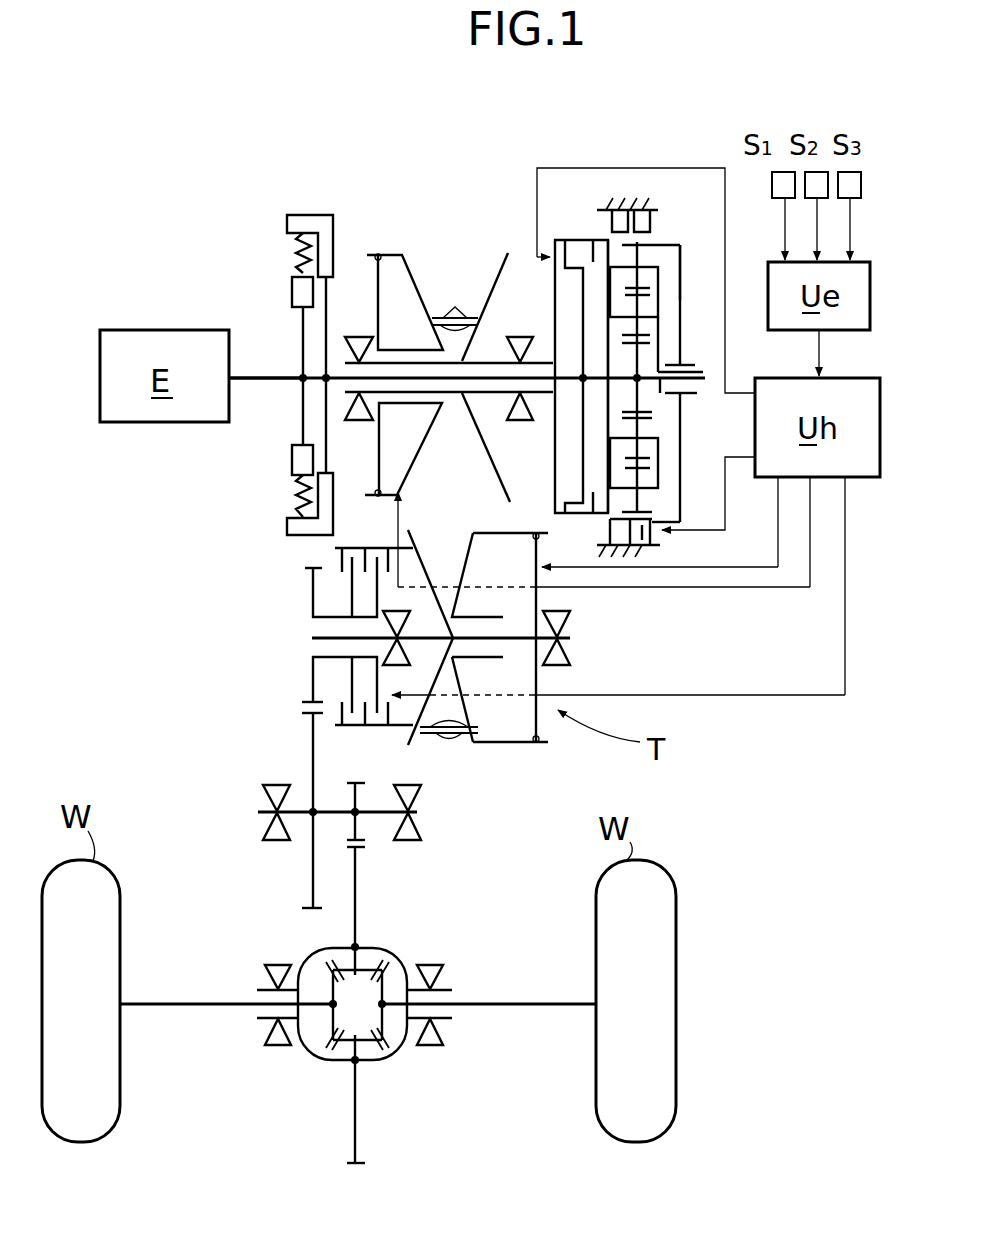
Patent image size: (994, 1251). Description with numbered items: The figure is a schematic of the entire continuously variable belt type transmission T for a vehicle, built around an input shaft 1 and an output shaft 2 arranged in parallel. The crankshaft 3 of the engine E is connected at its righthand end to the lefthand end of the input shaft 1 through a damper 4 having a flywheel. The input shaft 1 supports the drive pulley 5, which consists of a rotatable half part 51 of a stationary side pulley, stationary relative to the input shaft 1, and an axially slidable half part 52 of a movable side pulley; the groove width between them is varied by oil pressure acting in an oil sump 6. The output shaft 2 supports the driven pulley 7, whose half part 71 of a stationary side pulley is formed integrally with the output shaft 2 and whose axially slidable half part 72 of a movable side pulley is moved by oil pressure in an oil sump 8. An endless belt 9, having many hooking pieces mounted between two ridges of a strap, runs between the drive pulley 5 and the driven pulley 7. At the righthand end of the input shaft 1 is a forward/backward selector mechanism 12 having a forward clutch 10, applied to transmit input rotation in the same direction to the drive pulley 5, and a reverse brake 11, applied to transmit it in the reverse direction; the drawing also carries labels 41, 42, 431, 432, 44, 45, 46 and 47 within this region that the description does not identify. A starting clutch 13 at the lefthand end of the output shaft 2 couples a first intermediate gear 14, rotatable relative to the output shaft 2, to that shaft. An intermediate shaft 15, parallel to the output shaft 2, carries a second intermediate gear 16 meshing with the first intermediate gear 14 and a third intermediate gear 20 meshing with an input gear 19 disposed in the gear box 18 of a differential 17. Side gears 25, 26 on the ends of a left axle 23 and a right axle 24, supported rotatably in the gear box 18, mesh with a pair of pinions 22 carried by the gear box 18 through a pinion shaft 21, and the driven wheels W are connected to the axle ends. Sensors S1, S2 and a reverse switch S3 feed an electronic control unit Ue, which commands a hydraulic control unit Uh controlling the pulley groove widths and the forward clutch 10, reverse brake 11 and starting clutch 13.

The input shaft 1 is at (706, 378).
The output shaft 2 is at (569, 635).
The crankshaft 3 is at (272, 382).
The damper 4 is at (342, 232).
The drive pulley 5 is at (449, 337).
The half part of stationary side pulley 51 is at (493, 277).
The half part of movable side pulley 52 is at (418, 278).
The oil sump 6 is at (409, 446).
The driven pulley 7 is at (485, 477).
The half part of stationary side pulley 71 is at (412, 530).
The half part of movable side pulley 72 is at (470, 534).
The oil sump 8 is at (515, 569).
The endless belt 9 is at (447, 738).
The forward clutch 10 is at (556, 232).
The reverse brake 11 is at (666, 220).
The forward/backward selector mechanism 12 is at (696, 403).
The starting clutch 13 is at (372, 730).
The first intermediate gear 14 is at (305, 569).
The intermediate shaft 15 is at (266, 806).
The second intermediate gear 16 is at (305, 912).
The differential 17 is at (354, 992).
The gear box 18 is at (402, 1050).
The input gear 19 is at (358, 1164).
The third intermediate gear 20 is at (364, 778).
The pinion shaft 21 is at (378, 960).
The pinions 22 is at (331, 961).
The left axle 23 is at (206, 1008).
The right axle 24 is at (525, 1010).
The side gear 25 is at (266, 985).
The side gear 26 is at (406, 960).
The planet carrier 41 is at (685, 306).
The sun gear 42 is at (632, 350).
The ring gear 431 is at (683, 280).
The clutch member 432 is at (606, 294).
The planet gears 44 is at (651, 340).
The brake 45 is at (678, 242).
The clutch 46 is at (621, 238).
The control line 47 is at (690, 467).